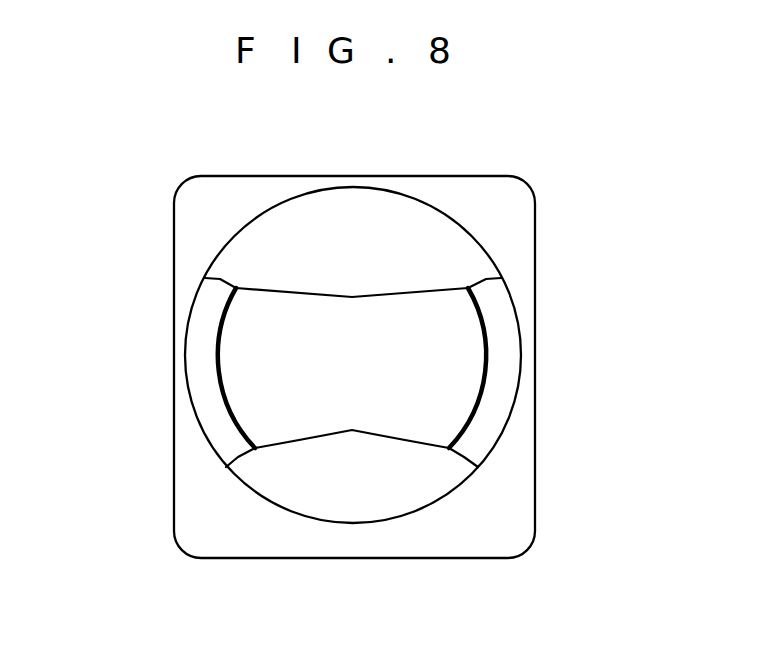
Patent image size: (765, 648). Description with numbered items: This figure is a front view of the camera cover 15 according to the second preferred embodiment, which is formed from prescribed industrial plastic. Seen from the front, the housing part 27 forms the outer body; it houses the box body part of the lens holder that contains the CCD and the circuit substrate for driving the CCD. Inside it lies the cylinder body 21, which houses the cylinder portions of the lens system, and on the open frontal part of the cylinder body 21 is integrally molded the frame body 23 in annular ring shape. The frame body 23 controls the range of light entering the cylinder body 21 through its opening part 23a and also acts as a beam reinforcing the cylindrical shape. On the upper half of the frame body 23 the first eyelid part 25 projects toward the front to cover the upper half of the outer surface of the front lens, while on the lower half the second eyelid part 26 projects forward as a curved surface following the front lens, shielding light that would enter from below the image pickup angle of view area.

The camera cover 15 is at (150, 362).
The cylinder body 21 is at (503, 425).
The frame body 23 is at (505, 388).
The opening part 23a is at (488, 338).
The first eyelid part 25 is at (369, 203).
The second eyelid part 26 is at (359, 500).
The housing part 27 is at (522, 225).